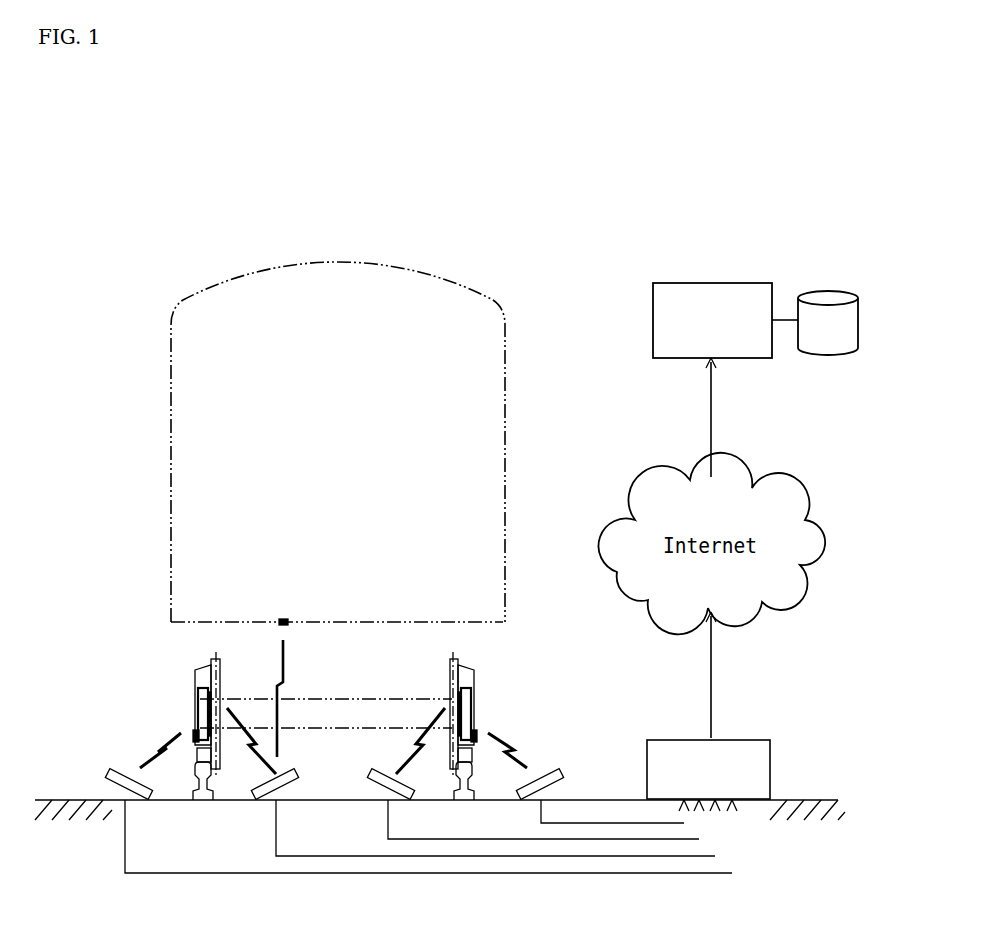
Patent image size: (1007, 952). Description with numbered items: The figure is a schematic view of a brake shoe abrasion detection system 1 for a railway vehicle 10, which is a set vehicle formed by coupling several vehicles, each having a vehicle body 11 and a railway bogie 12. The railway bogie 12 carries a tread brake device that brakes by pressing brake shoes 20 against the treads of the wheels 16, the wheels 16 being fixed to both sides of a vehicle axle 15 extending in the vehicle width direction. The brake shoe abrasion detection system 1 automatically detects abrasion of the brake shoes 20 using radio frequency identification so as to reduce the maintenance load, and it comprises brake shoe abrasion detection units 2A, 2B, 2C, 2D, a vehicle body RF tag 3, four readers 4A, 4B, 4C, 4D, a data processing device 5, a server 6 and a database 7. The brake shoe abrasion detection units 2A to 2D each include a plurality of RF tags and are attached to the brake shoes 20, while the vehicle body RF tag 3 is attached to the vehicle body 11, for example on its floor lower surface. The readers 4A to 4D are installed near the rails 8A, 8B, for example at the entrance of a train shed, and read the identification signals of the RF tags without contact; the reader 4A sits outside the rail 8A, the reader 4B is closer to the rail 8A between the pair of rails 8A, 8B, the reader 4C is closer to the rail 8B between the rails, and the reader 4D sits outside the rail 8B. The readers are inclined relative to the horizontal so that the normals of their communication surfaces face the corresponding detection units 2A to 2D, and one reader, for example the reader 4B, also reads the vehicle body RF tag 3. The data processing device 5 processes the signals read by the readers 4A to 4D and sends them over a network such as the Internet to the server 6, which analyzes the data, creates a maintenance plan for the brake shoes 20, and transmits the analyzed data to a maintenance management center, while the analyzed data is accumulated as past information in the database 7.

The brake shoe abrasion detection system 1 is at (670, 226).
The railway vehicle 10 is at (195, 298).
The vehicle body 11 is at (169, 437).
The railway bogie 12 is at (207, 662).
The wheel 16 is at (463, 662).
The vehicle axle 15 is at (350, 700).
The vehicle body RF tag 3 is at (286, 626).
The brake shoe 20 is at (197, 700).
The brake shoe abrasion detection unit 2A is at (195, 732).
The brake shoe abrasion detection unit 2B is at (213, 681).
The brake shoe abrasion detection unit 2C is at (455, 681).
The brake shoe abrasion detection unit 2D is at (476, 732).
The reader 4A is at (112, 773).
The reader 4B is at (292, 772).
The reader 4C is at (390, 772).
The reader 4D is at (562, 768).
The data processing device 5 is at (775, 760).
The server 6 is at (741, 283).
The database 7 is at (829, 290).
The rail 8A is at (200, 803).
The rail 8B is at (468, 803).